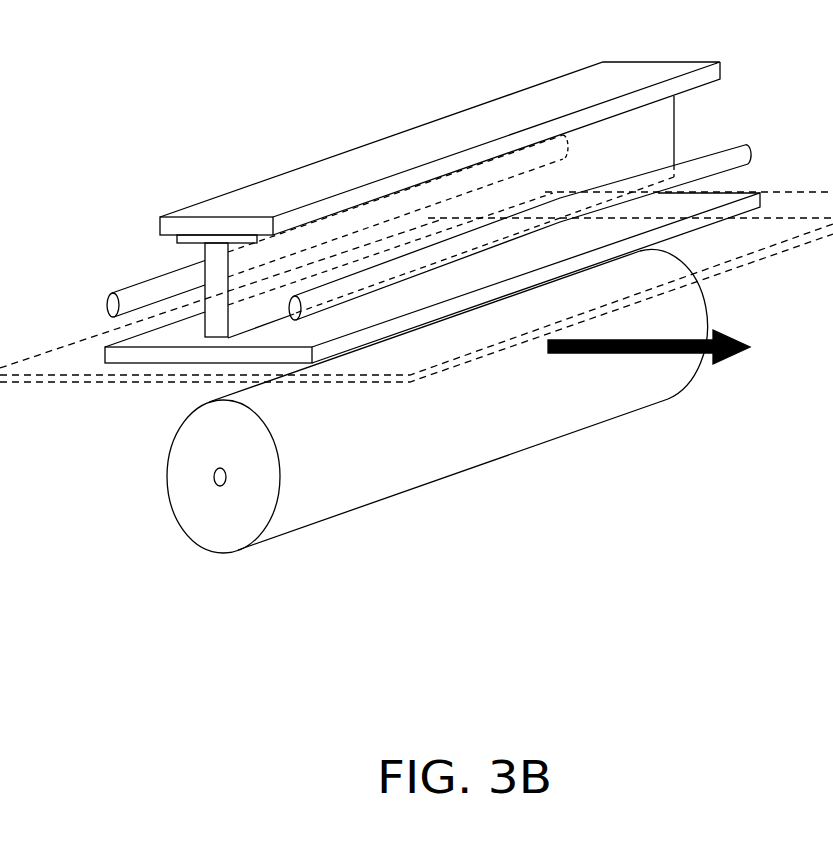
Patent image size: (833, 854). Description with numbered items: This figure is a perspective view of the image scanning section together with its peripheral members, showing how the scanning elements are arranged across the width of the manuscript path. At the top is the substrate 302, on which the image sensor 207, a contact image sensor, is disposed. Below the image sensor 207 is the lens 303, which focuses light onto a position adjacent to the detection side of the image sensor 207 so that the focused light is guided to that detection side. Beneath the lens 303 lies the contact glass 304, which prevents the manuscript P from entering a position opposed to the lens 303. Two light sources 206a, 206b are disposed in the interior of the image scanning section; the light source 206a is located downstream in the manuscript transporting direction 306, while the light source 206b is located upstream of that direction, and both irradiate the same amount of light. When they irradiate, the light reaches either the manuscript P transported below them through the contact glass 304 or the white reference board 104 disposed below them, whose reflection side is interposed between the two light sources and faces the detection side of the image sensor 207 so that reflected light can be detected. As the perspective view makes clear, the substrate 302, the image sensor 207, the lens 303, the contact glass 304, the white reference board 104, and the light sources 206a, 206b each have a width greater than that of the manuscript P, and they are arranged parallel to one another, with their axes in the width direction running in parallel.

The substrate 302 is at (318, 170).
The lens 303 is at (633, 130).
The image sensor 207 is at (188, 234).
The light source 206a is at (748, 152).
The light source 206b is at (130, 292).
The contact glass 304 is at (122, 365).
The manuscript P is at (53, 384).
The white reference board 104 is at (197, 528).
The manuscript transporting direction 306 is at (693, 381).